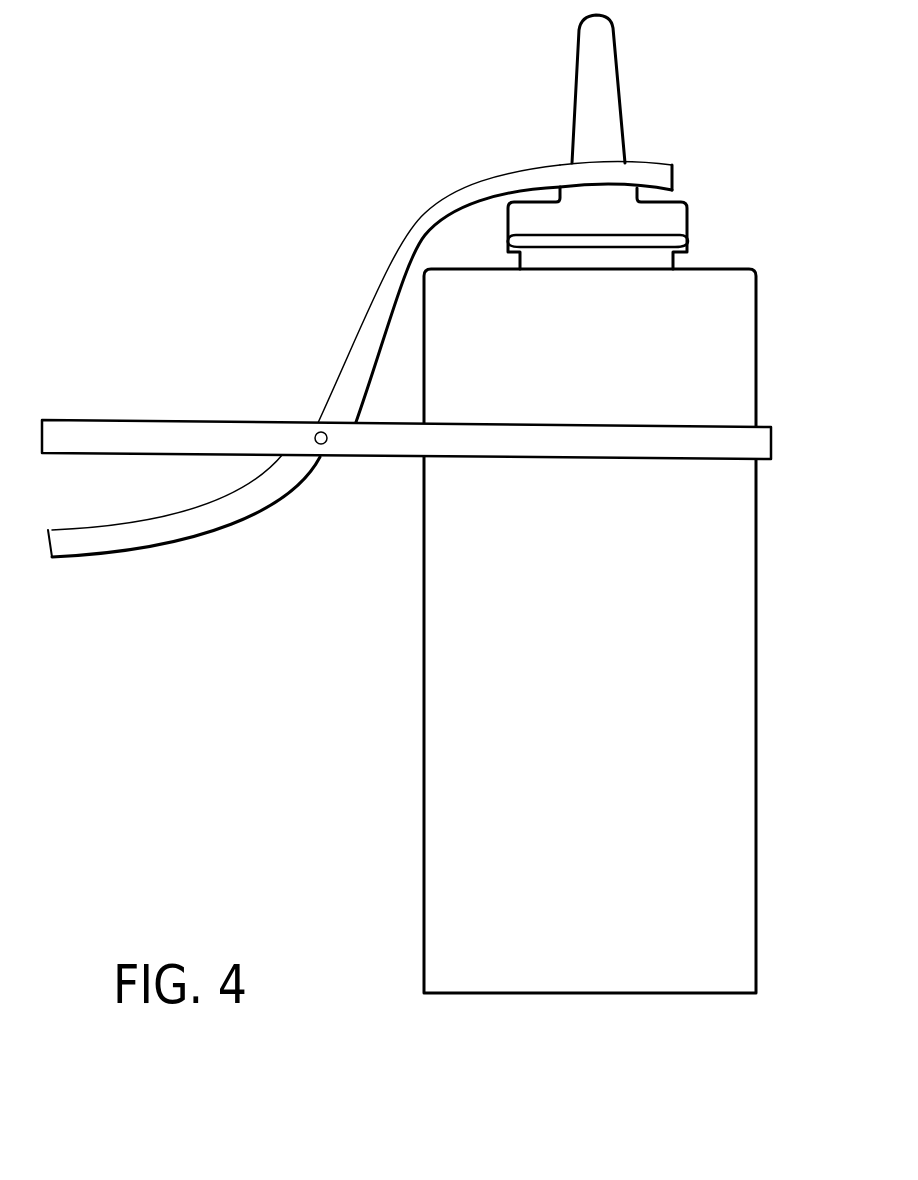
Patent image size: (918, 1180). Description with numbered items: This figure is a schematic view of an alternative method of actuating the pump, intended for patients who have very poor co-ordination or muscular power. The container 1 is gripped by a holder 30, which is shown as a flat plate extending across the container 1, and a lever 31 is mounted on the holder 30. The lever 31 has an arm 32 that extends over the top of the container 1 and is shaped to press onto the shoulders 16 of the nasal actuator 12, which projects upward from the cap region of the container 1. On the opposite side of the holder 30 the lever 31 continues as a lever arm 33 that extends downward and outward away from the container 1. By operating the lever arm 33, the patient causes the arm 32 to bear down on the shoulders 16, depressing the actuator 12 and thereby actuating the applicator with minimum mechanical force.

The container 1 is at (735, 570).
The actuator 12 is at (605, 77).
The shoulders 16 is at (683, 211).
The holder 30 is at (217, 438).
The lever 31 is at (425, 233).
The arm 32 is at (505, 190).
The lever arm 33 is at (232, 503).